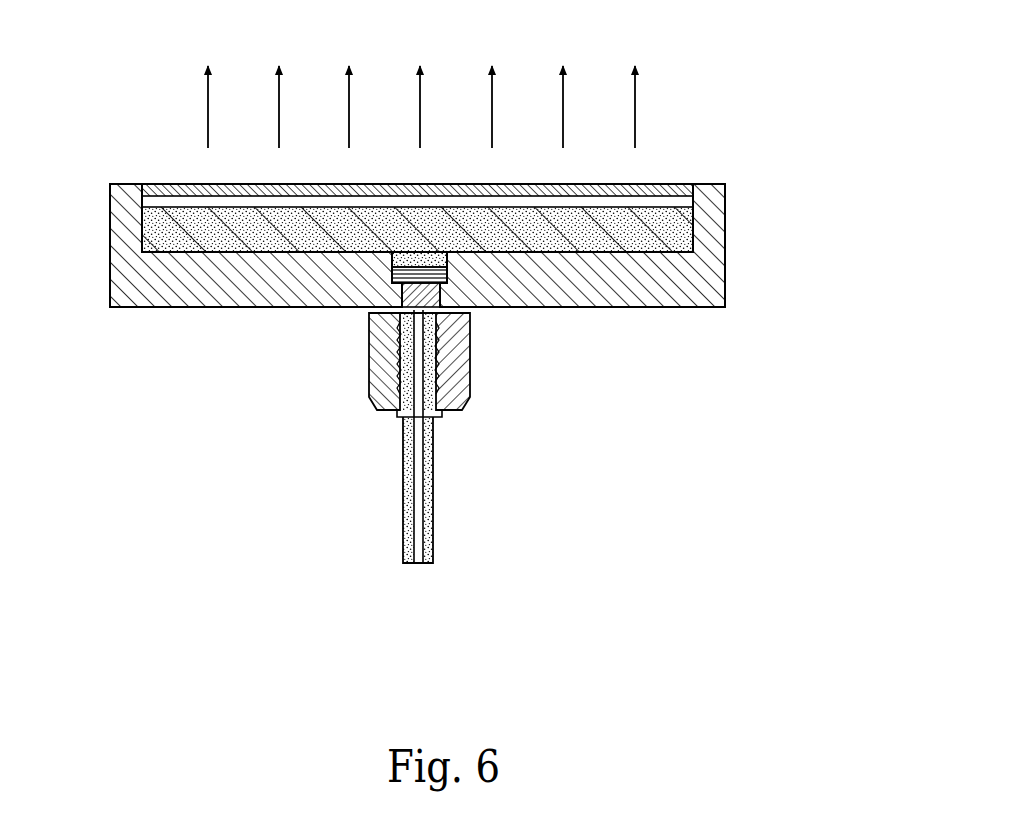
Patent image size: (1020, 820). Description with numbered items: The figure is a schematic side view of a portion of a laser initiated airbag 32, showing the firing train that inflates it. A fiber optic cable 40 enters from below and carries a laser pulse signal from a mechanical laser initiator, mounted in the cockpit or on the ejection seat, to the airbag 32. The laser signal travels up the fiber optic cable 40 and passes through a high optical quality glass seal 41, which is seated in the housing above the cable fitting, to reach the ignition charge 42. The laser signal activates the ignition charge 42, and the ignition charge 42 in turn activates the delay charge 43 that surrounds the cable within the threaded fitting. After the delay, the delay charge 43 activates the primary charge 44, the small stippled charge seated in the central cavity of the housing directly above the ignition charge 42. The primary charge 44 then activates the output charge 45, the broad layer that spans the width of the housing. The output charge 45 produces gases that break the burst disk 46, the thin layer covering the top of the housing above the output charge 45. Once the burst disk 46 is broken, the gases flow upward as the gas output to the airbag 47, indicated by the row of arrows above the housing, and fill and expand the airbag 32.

The laser initiated airbag 32 is at (80, 262).
The fiber optic cable 40 is at (443, 549).
The high optical quality glass seal 41 is at (443, 296).
The ignition charge 42 is at (448, 281).
The delay charge 43 is at (390, 282).
The primary charge 44 is at (390, 258).
The output charge 45 is at (524, 238).
The burst disk 46 is at (165, 183).
The gas output to air bag 47 is at (421, 81).